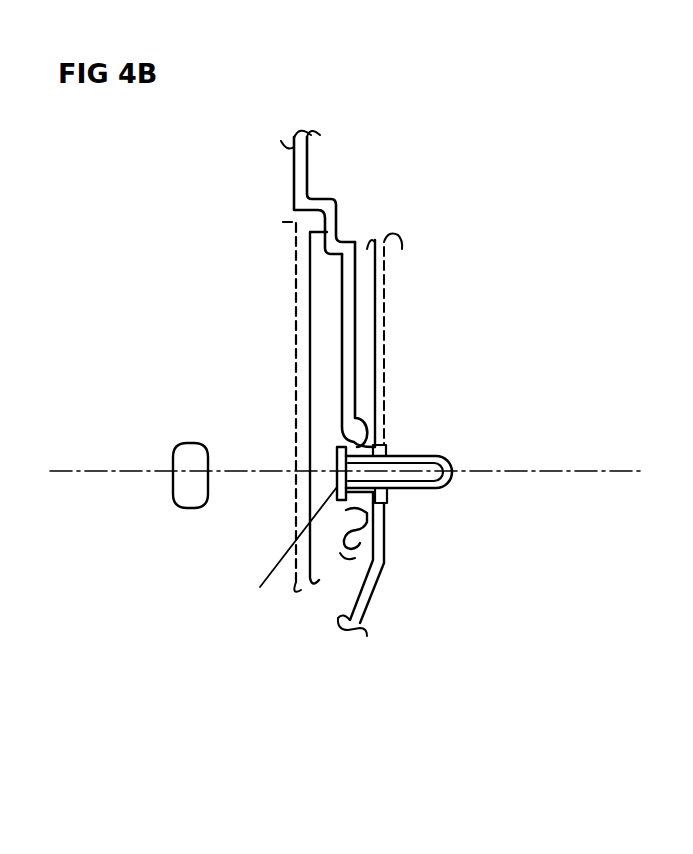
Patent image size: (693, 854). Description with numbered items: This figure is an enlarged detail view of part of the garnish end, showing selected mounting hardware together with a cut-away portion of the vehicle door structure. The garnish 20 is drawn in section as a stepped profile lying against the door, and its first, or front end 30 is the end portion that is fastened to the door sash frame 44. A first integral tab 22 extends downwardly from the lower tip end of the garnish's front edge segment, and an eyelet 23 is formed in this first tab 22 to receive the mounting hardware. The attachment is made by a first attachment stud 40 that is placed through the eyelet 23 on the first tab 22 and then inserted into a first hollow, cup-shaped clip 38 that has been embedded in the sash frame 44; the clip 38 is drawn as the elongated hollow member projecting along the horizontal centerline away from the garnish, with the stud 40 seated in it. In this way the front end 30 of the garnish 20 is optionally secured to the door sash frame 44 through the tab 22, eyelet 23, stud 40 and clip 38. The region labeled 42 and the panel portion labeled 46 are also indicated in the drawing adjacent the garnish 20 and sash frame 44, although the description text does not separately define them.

The garnish 20 is at (305, 183).
The panel liner 46 is at (300, 292).
The first integral tab 22 is at (340, 340).
The mounting foot 42 is at (330, 438).
The door sash frame 44 is at (380, 385).
The first hollow cup-shaped clip 38 is at (450, 455).
The first attachment stud 40 is at (388, 493).
The eyelet 23 is at (380, 500).
The front end of the garnish 30 is at (350, 547).